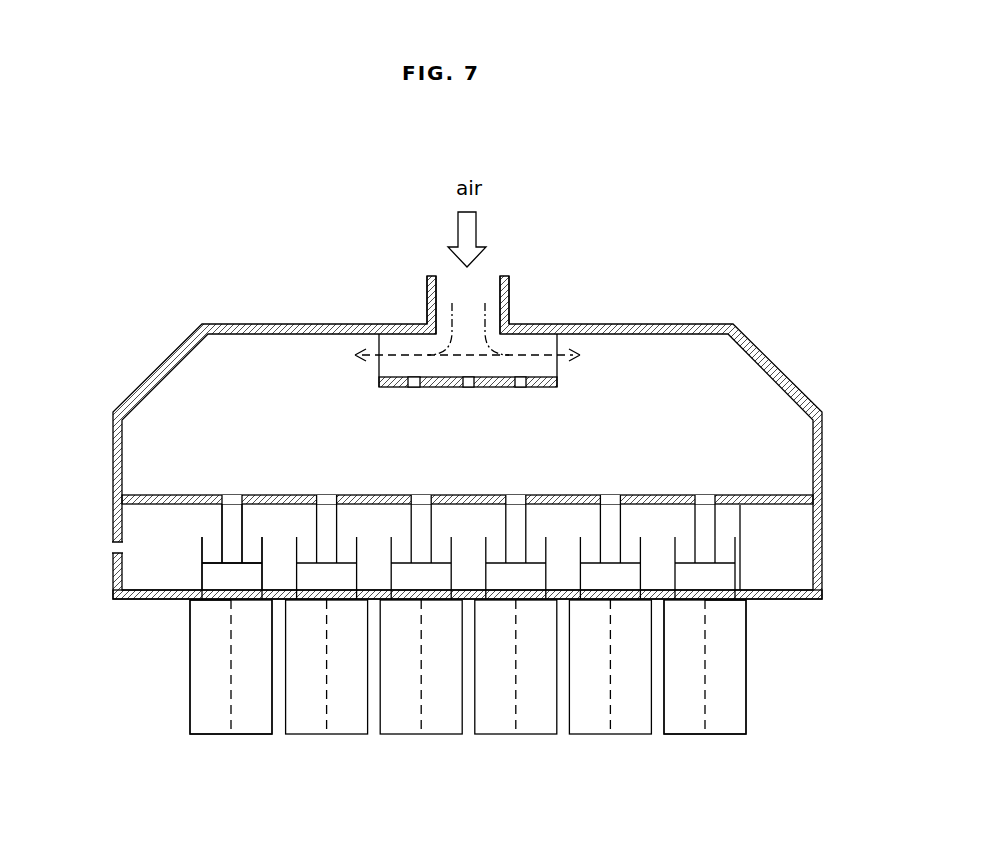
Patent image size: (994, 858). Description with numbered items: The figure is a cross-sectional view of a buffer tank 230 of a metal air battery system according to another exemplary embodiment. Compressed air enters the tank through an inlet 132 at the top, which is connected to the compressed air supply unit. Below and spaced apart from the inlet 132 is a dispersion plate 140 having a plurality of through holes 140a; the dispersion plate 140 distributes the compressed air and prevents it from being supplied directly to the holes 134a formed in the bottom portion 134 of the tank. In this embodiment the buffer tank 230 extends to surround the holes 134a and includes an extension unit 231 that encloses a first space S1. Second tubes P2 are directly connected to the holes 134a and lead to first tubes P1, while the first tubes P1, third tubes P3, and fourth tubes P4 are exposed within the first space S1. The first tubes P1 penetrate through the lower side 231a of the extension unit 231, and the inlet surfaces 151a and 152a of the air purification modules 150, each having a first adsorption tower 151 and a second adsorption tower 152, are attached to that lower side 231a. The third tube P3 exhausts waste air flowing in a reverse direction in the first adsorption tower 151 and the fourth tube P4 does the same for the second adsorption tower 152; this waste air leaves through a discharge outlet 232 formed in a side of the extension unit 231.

The buffer tank 230 is at (735, 270).
The extension unit 231 is at (822, 548).
The lower side of extension unit 231a is at (135, 603).
The discharge outlet 232 is at (113, 548).
The inlet 132 is at (507, 297).
The dispersion plate 140 is at (515, 414).
The through holes 140a is at (522, 388).
The bottom portion 134 is at (172, 497).
The holes 134a is at (327, 497).
The first tube P1 is at (200, 574).
The second tube P2 is at (242, 530).
The third tube P3 is at (200, 548).
The fourth tube P4 is at (265, 550).
The first space S1 is at (770, 548).
The air purification modules 150 is at (225, 737).
The first adsorption tower 151 is at (195, 690).
The inlet surface of first adsorption tower 151a is at (210, 601).
The second adsorption tower 152 is at (268, 692).
The inlet surface of second adsorption tower 152a is at (725, 601).